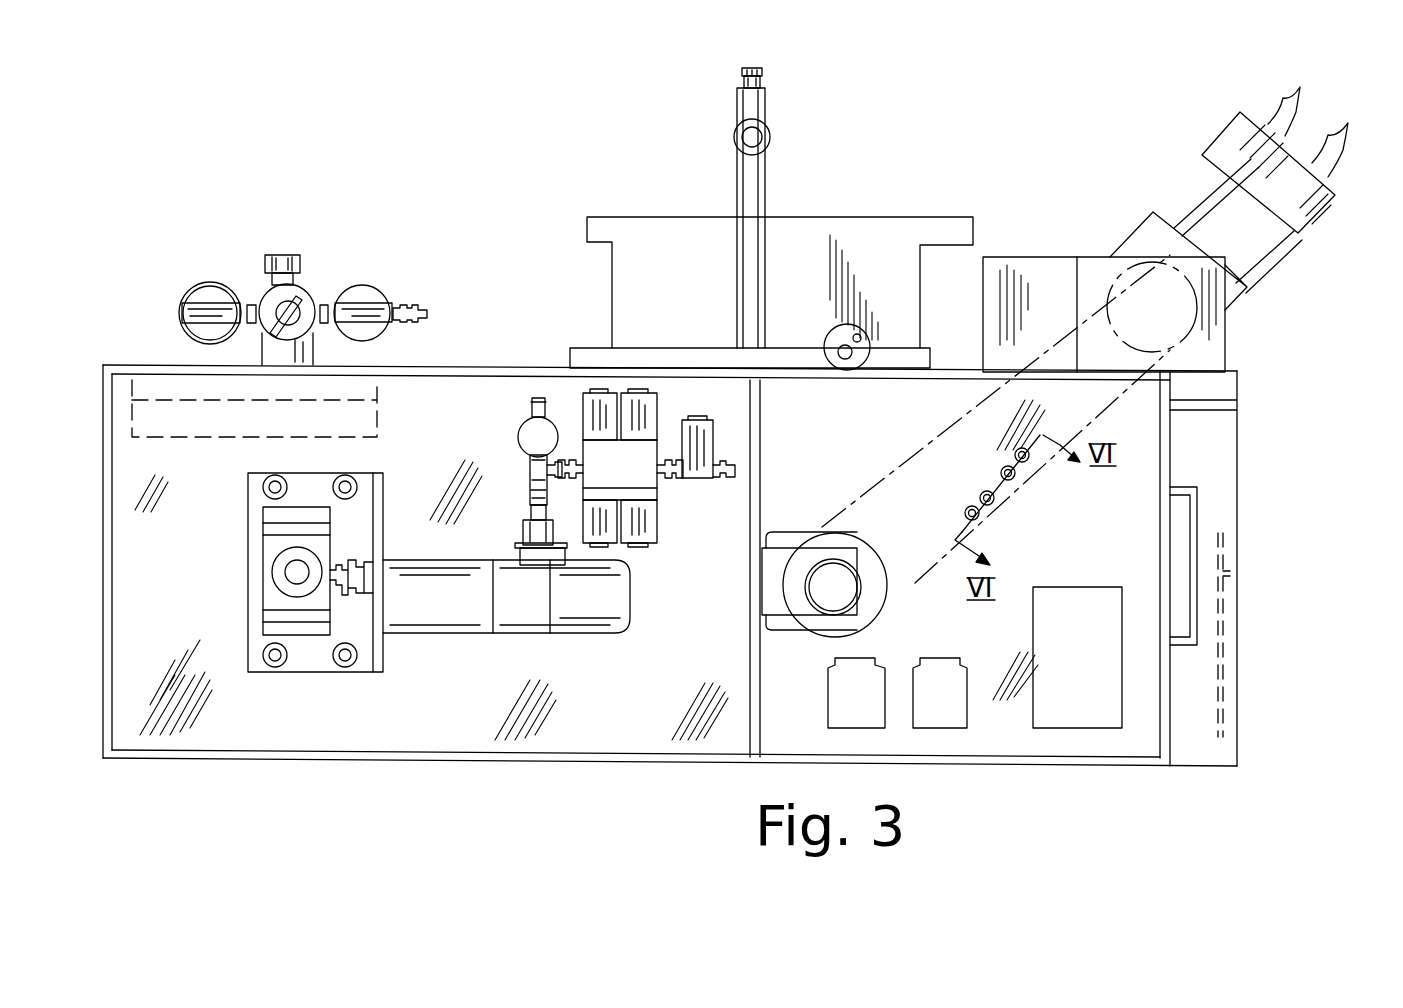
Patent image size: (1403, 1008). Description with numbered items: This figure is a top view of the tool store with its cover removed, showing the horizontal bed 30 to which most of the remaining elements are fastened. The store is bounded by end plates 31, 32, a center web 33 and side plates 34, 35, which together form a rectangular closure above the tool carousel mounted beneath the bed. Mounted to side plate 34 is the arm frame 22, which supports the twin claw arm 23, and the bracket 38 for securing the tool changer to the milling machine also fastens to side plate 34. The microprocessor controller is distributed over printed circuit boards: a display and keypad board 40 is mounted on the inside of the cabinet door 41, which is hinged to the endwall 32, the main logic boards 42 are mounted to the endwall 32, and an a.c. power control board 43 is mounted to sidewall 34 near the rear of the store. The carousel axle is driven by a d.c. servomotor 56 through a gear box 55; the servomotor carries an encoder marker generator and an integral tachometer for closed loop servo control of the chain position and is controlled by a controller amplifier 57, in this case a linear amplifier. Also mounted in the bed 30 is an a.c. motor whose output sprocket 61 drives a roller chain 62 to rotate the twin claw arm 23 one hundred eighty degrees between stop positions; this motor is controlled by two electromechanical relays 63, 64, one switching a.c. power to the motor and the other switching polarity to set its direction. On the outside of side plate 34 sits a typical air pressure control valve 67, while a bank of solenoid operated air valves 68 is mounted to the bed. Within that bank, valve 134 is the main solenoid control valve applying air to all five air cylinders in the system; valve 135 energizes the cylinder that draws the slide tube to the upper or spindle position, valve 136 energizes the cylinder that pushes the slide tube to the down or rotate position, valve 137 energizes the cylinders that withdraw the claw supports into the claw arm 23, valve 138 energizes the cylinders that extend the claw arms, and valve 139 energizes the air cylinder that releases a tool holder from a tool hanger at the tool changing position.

The arm frame 22 is at (1228, 342).
The twin claw arm 23 is at (1317, 227).
The horizontal bed 30 is at (645, 700).
The end plate 31 is at (113, 554).
The end plate 32 is at (1160, 462).
The center web 33 is at (761, 455).
The side plate 34 is at (482, 362).
The side plate 35 is at (384, 758).
The bracket 38 is at (622, 232).
The display and keypad board 40 is at (1224, 652).
The cabinet door 41 is at (1238, 706).
The main logic boards 42 is at (1195, 525).
The a.c. power control board 43 is at (186, 418).
The gear box 55 is at (272, 548).
The d.c. servomotor 56 is at (465, 616).
The controller amplifier 57 is at (1078, 604).
The output sprocket 61 is at (783, 557).
The roller chain 62 is at (905, 463).
The electromechanical relay 63 is at (846, 700).
The electromechanical relay 64 is at (945, 716).
The air pressure control valve 67 is at (297, 253).
The bank of solenoid operated air valves 68 is at (650, 448).
The main solenoid control valve 134 is at (520, 438).
The valve 135 is at (600, 392).
The valve 136 is at (610, 542).
The valve 137 is at (645, 392).
The valve 138 is at (662, 540).
The valve 139 is at (720, 432).